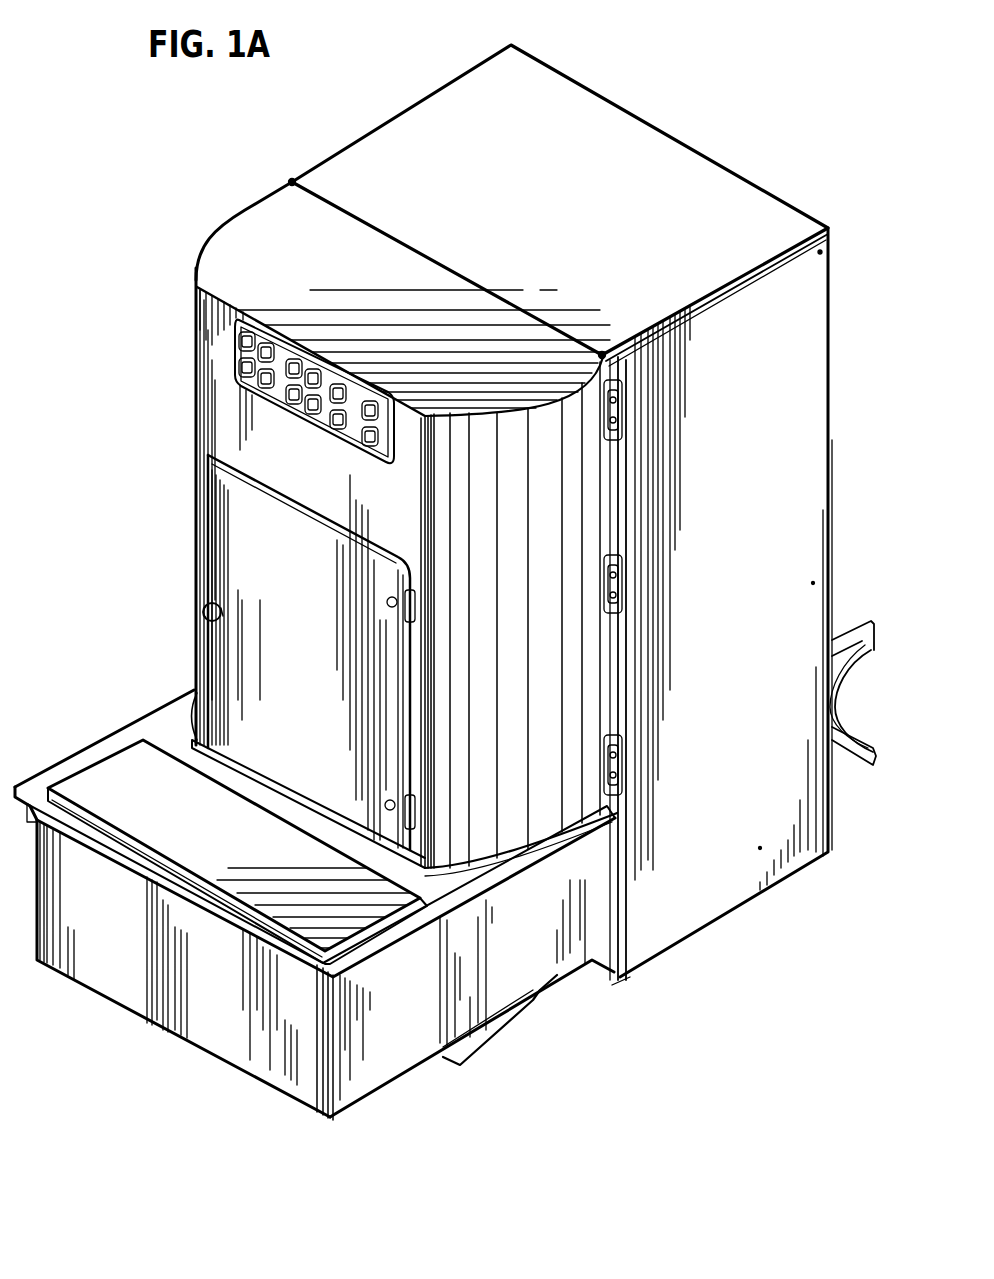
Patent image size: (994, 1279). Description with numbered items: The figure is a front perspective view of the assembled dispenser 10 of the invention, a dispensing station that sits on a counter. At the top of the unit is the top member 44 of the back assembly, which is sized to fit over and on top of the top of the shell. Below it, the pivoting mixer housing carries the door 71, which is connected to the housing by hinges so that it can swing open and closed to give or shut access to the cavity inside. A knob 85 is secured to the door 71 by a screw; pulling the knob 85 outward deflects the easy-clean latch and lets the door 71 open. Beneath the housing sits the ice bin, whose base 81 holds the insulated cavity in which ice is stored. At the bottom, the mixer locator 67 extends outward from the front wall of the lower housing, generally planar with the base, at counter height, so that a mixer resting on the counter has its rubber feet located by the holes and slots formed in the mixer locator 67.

The dispenser 10 is at (138, 453).
The top member 44 is at (558, 230).
The door 71 is at (325, 678).
The knob 85 is at (203, 610).
The base 81 is at (168, 1023).
The mixer locator 67 is at (527, 1018).